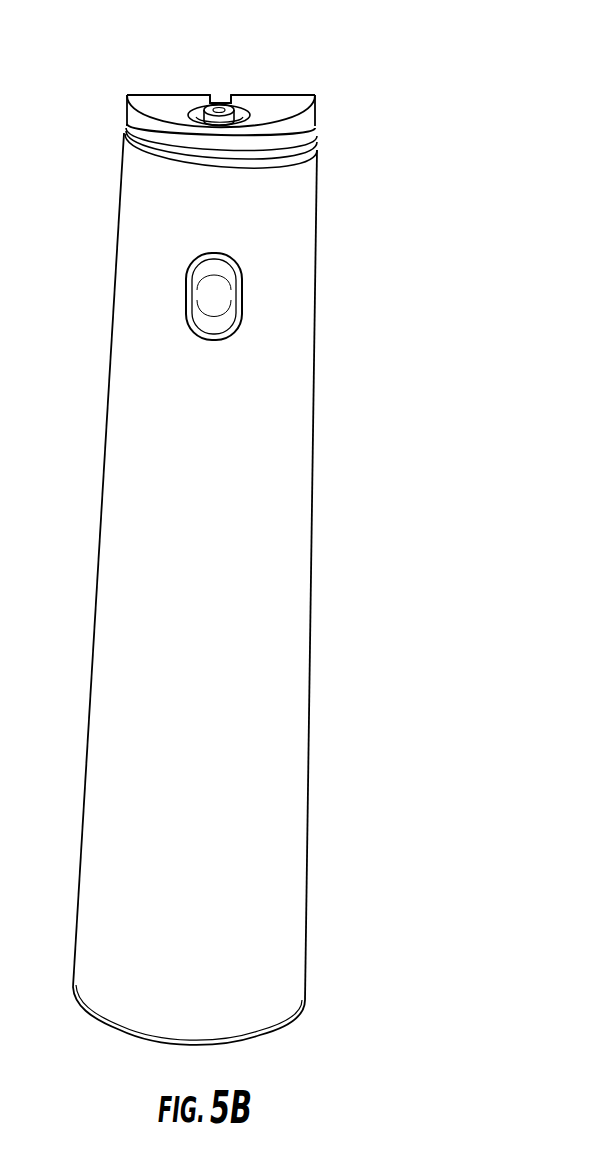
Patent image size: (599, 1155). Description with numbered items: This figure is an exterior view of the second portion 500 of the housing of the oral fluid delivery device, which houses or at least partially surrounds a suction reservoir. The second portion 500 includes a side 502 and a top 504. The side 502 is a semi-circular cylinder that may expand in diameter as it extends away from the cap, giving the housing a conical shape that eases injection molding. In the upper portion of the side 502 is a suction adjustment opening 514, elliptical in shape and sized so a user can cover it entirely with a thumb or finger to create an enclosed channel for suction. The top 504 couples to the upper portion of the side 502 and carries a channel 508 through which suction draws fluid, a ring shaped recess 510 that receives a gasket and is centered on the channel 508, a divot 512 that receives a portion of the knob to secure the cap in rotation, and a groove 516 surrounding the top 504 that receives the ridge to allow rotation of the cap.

The second portion 500 is at (432, 117).
The side 502 is at (293, 530).
The top 504 is at (297, 99).
The channel 508 is at (219, 110).
The ring shaped recess 510 is at (188, 115).
The divot 512 is at (233, 96).
The suction adjustment opening 514 is at (220, 303).
The groove 516 is at (276, 158).